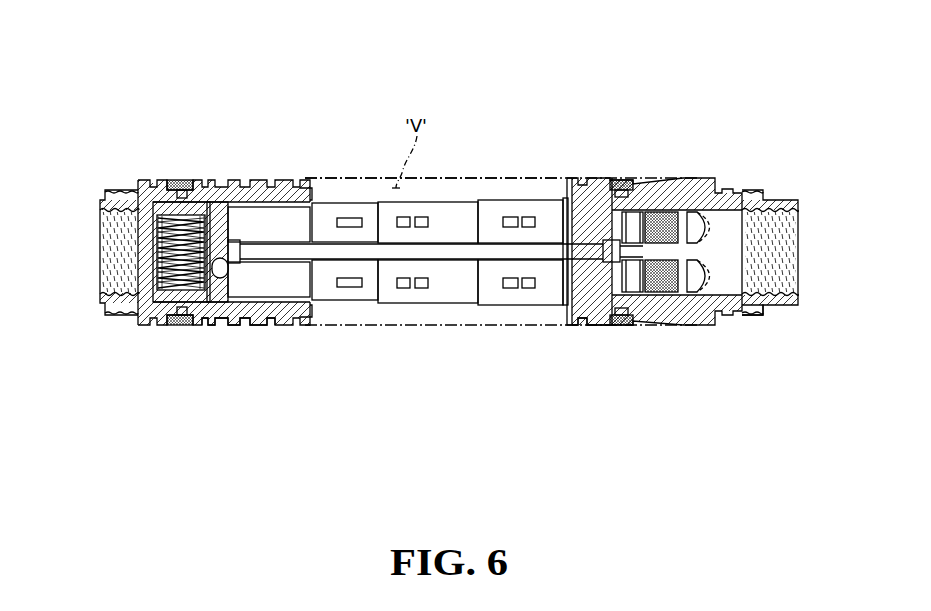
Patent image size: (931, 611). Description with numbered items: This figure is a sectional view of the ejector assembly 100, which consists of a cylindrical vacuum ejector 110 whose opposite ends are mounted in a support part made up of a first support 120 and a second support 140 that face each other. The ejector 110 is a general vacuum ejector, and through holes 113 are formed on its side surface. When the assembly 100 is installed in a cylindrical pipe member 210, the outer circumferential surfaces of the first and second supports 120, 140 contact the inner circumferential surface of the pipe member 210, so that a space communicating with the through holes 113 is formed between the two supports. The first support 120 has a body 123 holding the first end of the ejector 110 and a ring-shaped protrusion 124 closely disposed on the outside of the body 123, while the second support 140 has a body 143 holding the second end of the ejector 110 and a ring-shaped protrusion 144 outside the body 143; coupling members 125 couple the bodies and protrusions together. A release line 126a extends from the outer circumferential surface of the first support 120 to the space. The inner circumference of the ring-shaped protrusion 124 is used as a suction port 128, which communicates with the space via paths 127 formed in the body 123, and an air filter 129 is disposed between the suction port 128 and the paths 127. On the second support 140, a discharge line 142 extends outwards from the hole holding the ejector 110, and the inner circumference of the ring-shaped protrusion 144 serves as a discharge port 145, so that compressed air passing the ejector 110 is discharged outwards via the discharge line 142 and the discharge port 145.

The assembly 100 is at (566, 73).
The vacuum ejector 110 is at (456, 310).
The through holes 113 is at (403, 288).
The first support 120 is at (246, 167).
The body 123 is at (245, 327).
The ring-shaped protrusion 124 is at (162, 327).
The coupling members 125 is at (175, 178).
The release line 126a is at (306, 180).
The paths 127 is at (284, 231).
The suction port 128 is at (97, 285).
The air filter 129 is at (157, 262).
The second support 140 is at (593, 167).
The discharge line 142 is at (736, 261).
The body 143 is at (592, 327).
The ring-shaped protrusion 144 is at (777, 308).
The discharge port 145 is at (800, 290).
The pipe member 210 is at (470, 176).